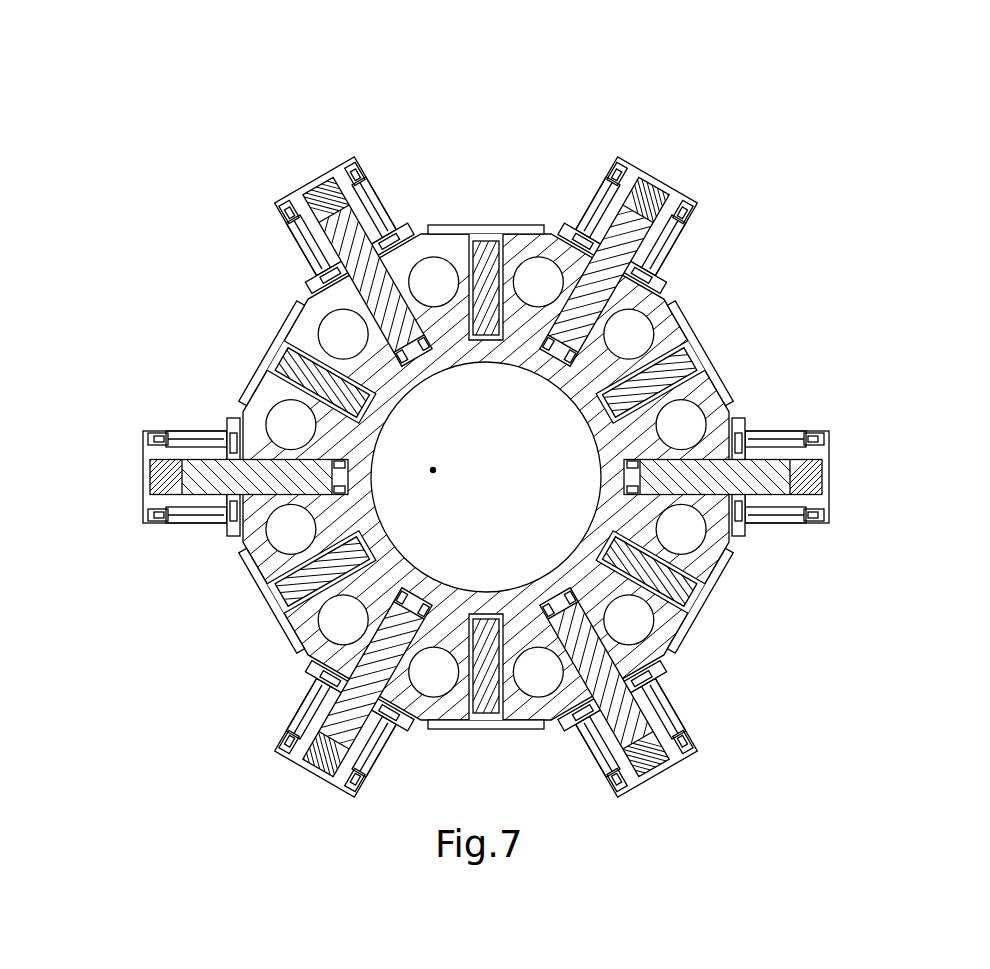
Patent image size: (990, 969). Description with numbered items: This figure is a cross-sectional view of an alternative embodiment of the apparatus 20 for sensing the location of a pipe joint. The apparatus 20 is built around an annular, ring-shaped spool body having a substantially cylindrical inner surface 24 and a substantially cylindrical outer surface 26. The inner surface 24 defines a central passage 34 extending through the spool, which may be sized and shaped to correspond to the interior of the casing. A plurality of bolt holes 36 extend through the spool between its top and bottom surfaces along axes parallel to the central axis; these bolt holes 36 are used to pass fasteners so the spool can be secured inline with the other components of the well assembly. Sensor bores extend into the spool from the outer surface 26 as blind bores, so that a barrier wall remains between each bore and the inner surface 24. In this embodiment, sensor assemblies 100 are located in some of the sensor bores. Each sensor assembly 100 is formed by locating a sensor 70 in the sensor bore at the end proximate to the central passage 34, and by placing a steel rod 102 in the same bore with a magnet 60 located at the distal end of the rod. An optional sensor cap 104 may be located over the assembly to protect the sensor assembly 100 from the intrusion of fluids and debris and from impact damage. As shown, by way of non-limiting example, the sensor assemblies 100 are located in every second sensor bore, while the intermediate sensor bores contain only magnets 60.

The apparatus 20 is at (495, 458).
The inner surface 24 is at (587, 542).
The outer surface 26 is at (419, 722).
The central passage 34 is at (433, 470).
The bolt holes 36 is at (542, 258).
The magnet 60 is at (652, 197).
The sensor 70 is at (712, 398).
The sensor assembly 100 is at (504, 480).
The steel rod 102 is at (223, 493).
The sensor cap 104 is at (697, 203).